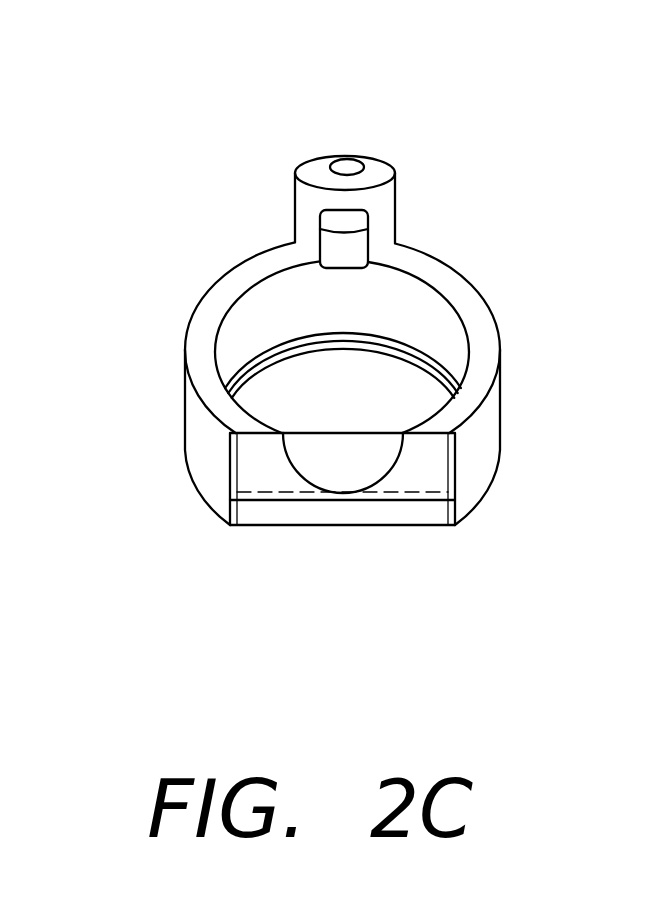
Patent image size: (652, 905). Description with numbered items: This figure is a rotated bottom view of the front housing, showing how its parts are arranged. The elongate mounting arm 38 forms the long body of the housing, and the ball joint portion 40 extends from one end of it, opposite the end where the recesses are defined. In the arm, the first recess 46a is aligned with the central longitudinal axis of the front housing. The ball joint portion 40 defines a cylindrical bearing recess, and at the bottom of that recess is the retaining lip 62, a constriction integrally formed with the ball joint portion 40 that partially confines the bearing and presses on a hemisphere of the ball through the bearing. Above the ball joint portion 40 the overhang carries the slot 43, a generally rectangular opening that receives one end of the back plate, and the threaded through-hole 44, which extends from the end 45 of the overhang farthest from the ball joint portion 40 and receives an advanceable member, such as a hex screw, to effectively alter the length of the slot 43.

The elongate mounting arm 38 is at (502, 410).
The ball joint portion 40 is at (187, 328).
The slot 43 is at (355, 223).
The threaded through-hole 44 is at (347, 165).
The end of the overhang 45 is at (288, 172).
The first recess 46a is at (338, 493).
The retaining lip 62 is at (387, 340).